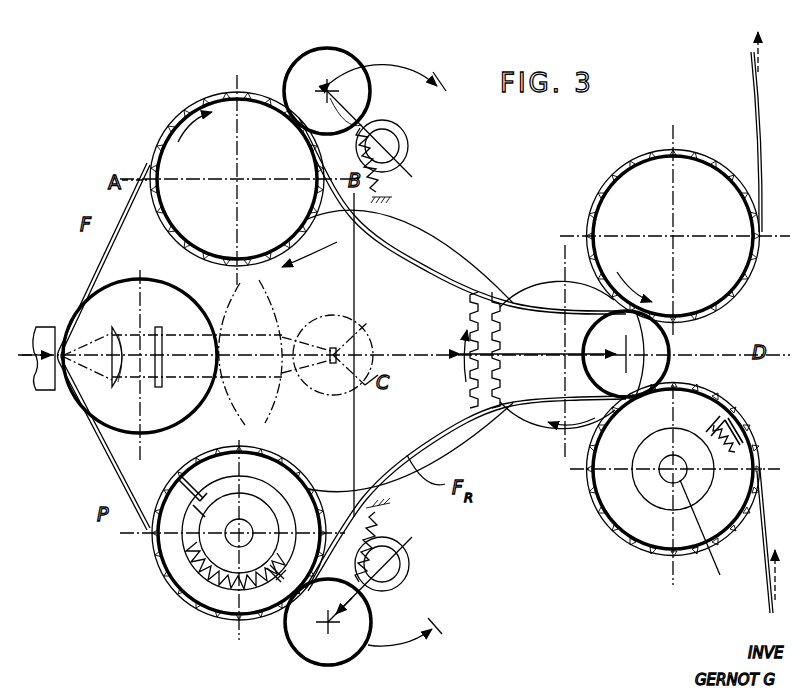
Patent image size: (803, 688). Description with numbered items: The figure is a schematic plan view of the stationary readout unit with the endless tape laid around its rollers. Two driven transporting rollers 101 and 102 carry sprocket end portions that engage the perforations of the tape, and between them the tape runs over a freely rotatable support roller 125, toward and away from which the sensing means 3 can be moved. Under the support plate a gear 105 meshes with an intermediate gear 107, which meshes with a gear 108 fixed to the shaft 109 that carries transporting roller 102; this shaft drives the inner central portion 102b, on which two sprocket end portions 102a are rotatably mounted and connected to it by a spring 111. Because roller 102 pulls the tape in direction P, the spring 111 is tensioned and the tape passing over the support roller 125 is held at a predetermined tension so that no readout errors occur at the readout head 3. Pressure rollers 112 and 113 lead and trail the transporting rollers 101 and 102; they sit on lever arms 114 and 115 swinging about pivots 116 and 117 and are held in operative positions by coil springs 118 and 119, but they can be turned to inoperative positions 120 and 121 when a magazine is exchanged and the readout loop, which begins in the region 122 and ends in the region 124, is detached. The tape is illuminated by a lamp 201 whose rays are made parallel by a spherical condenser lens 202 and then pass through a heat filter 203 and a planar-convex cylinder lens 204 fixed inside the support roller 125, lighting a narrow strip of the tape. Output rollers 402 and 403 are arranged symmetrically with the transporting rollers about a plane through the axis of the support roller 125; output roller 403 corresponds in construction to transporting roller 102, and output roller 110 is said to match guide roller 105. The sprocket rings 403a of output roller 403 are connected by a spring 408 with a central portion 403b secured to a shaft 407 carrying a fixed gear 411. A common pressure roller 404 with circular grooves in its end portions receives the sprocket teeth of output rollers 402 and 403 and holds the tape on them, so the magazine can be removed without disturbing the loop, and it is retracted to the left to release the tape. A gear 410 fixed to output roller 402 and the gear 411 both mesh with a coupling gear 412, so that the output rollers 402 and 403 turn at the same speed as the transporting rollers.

The sensing means 3 is at (45, 330).
The transporting roller 101 is at (265, 105).
The transporting roller 102 is at (216, 478).
The sprocket end portions 102a is at (180, 563).
The inner central portion 102b is at (296, 565).
The gear 105 is at (208, 96).
The intermediate gear 107 is at (447, 249).
The gear 108 is at (263, 460).
The shaft 109 is at (249, 522).
The output roller 110 is at (313, 502).
The spring 111 is at (205, 590).
The pressure roller 112 is at (345, 60).
The pressure roller 113 is at (303, 637).
The lever arm 114 is at (380, 113).
The lever arm 115 is at (380, 592).
The pivot 116 is at (393, 146).
The pivot 117 is at (397, 561).
The coil spring 118 is at (380, 185).
The coil spring 119 is at (380, 524).
The inoperative position 120 is at (438, 82).
The inoperative position 121 is at (438, 632).
The region 122 is at (542, 402).
The region 124 is at (520, 305).
The support roller 125 is at (148, 280).
The lamp 201 is at (365, 322).
The spherical condenser lens 202 is at (280, 315).
The heat filter 203 is at (162, 377).
The planar-convex cylinder lens 204 is at (113, 330).
The output roller 402 is at (675, 230).
The output roller 403 is at (675, 485).
The sprocket end portions 403a is at (605, 518).
The central portion 403b is at (665, 495).
The common pressure roller 404 is at (668, 350).
The shaft 407 is at (712, 538).
The spring 408 is at (733, 460).
The gear 410 is at (650, 158).
The gear 411 is at (730, 407).
The coupling gear 412 is at (548, 268).